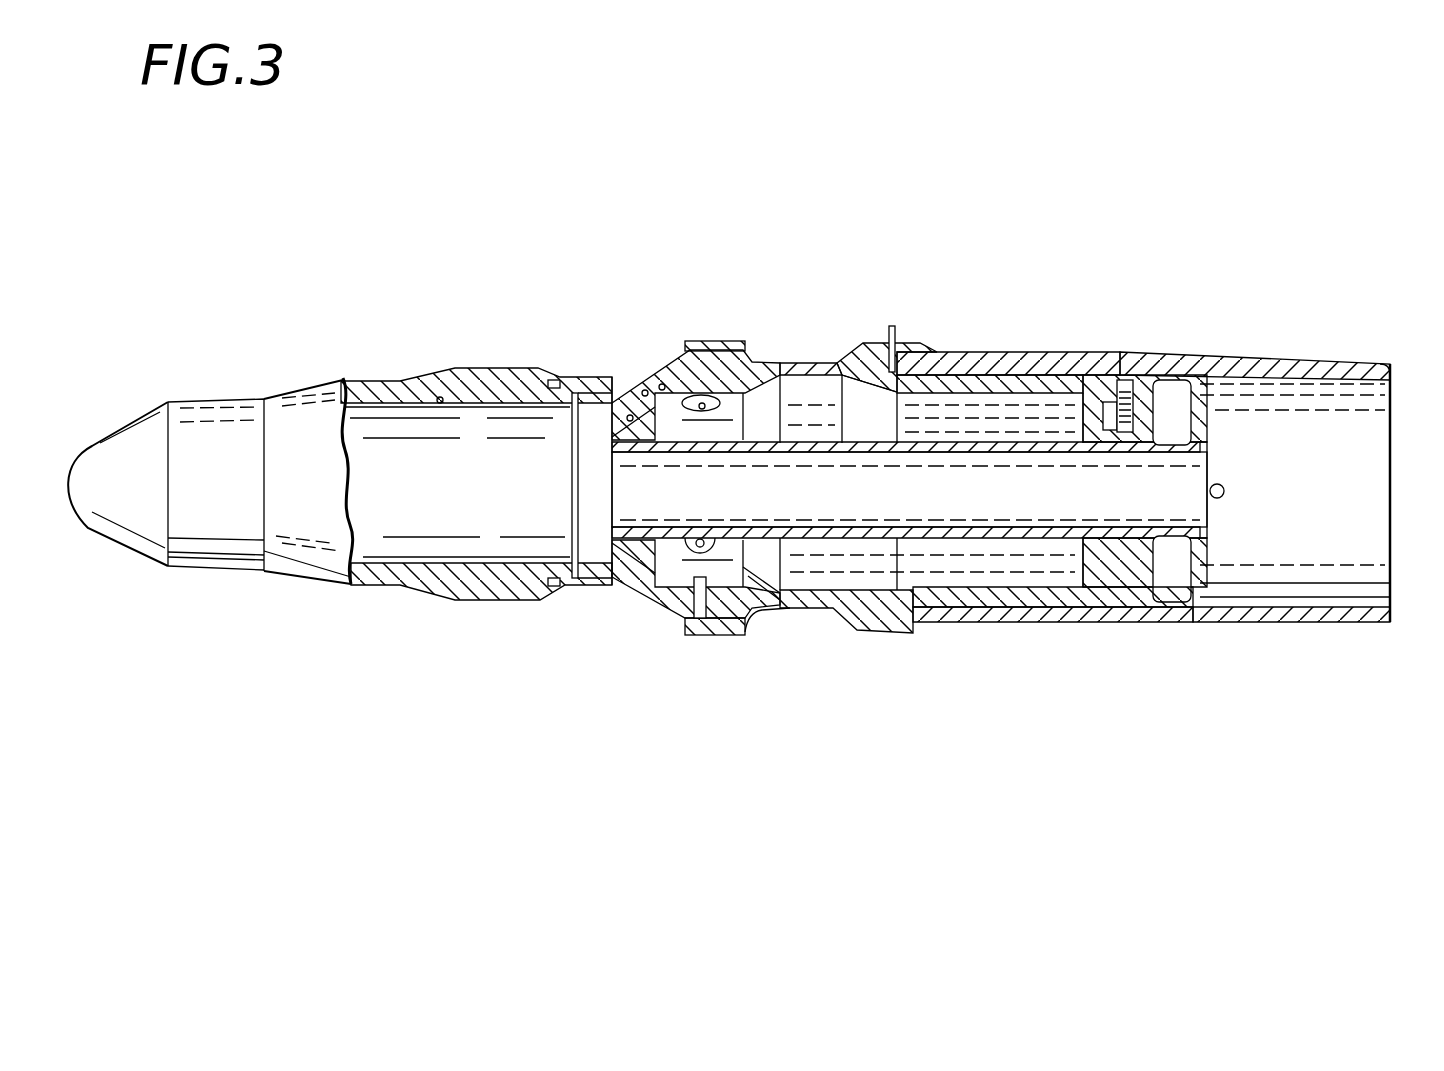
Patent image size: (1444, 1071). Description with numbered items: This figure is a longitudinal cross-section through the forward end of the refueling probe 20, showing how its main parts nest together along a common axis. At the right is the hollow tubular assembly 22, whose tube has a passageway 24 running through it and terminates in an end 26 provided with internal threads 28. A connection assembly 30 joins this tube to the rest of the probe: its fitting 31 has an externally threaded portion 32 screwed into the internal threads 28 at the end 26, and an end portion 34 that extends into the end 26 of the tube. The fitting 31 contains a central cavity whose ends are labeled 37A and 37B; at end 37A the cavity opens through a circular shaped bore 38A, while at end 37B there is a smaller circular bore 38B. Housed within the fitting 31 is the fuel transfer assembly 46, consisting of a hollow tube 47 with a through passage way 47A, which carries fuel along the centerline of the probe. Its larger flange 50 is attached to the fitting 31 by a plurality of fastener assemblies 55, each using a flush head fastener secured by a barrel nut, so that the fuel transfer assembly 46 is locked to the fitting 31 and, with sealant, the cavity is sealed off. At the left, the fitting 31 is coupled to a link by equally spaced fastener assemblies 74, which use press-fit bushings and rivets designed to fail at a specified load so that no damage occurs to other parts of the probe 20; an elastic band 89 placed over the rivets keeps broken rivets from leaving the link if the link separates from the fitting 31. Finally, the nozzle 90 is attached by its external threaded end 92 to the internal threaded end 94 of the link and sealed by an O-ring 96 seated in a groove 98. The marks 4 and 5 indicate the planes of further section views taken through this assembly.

The refueling probe 20 is at (1282, 332).
The hollow tubular assembly 22 is at (1347, 623).
The passageway 24 is at (1405, 364).
The end 26 is at (927, 352).
The internal threads 28 is at (985, 372).
The connection assembly 30 is at (810, 618).
The fitting 31 is at (793, 363).
The externally threaded portion 32 is at (943, 607).
The end portion 34 is at (1088, 607).
The end of central cavity 37A is at (1157, 567).
The end of central cavity 37B is at (597, 403).
The circular shaped bore 38A is at (1152, 585).
The smaller circular bore 38B is at (642, 548).
The fuel transfer assembly 46 is at (1017, 552).
The hollow tube 47 is at (878, 540).
The through passage way 47A is at (975, 504).
The larger flange 50 is at (1080, 408).
The fastener assemblies 55 is at (1128, 372).
The fastener assemblies 74 is at (688, 607).
The elastic band 89 is at (700, 341).
The nozzle 90 is at (316, 386).
The external threaded end 92 is at (493, 396).
The internal threaded end 94 is at (460, 395).
The O-ring 96 is at (557, 586).
The groove 98 is at (554, 384).
The section line 4- 4 is at (1118, 163).
The section line 5- 5 is at (700, 163).